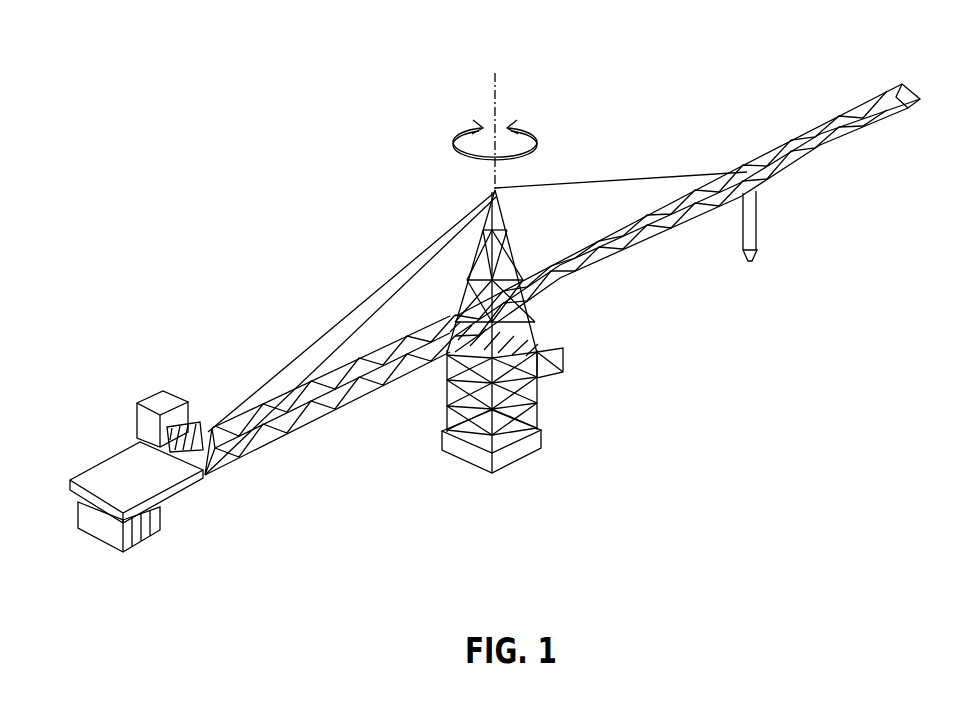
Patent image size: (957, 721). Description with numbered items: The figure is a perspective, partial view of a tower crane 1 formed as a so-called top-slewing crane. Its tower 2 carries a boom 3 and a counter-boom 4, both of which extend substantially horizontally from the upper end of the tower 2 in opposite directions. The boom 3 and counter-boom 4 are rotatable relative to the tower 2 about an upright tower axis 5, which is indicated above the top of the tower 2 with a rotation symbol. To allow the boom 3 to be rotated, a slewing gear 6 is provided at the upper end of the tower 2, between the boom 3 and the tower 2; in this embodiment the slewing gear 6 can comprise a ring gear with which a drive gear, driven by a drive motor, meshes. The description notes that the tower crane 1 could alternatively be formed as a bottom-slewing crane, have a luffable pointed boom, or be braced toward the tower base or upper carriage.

The tower crane 1 is at (594, 150).
The tower 2 is at (457, 470).
The boom 3 is at (828, 118).
The counter-boom 4 is at (343, 378).
The tower axis 5 is at (492, 85).
The slewing gear 6 is at (455, 316).